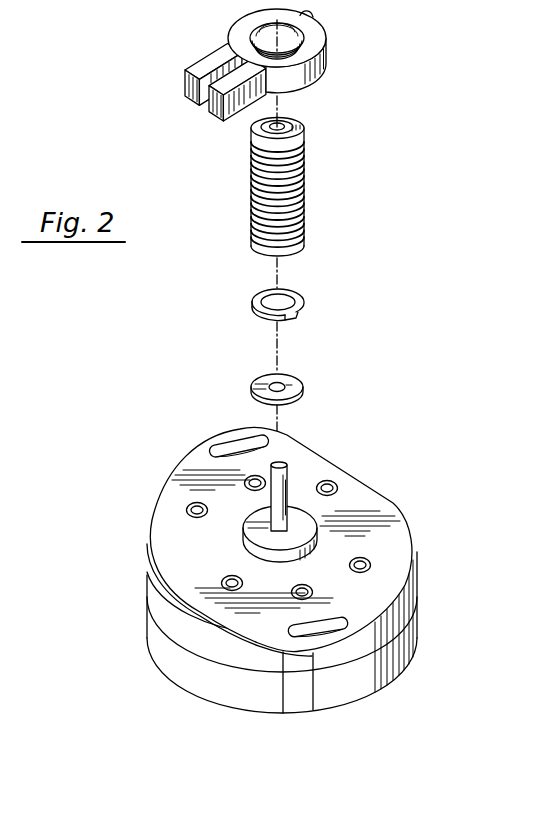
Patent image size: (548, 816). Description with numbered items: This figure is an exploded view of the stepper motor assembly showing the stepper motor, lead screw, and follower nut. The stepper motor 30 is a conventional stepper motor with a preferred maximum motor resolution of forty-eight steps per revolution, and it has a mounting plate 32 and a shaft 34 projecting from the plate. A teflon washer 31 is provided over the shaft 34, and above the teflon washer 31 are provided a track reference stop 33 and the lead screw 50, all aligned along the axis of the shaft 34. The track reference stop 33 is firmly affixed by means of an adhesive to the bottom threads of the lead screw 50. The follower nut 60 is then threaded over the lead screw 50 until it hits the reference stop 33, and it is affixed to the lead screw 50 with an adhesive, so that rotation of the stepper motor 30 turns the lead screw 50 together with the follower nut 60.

The follower nut 60 is at (327, 58).
The lead screw 50 is at (305, 190).
The track reference stop 33 is at (303, 305).
The teflon washer 31 is at (302, 388).
The shaft 34 is at (284, 483).
The mounting plate 32 is at (184, 511).
The stepper motor 30 is at (295, 570).